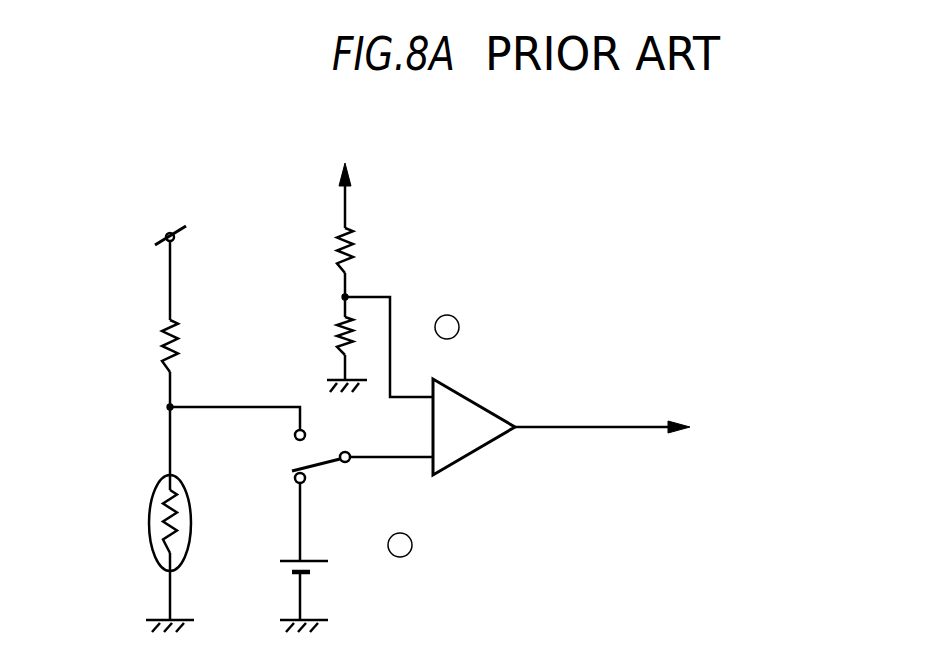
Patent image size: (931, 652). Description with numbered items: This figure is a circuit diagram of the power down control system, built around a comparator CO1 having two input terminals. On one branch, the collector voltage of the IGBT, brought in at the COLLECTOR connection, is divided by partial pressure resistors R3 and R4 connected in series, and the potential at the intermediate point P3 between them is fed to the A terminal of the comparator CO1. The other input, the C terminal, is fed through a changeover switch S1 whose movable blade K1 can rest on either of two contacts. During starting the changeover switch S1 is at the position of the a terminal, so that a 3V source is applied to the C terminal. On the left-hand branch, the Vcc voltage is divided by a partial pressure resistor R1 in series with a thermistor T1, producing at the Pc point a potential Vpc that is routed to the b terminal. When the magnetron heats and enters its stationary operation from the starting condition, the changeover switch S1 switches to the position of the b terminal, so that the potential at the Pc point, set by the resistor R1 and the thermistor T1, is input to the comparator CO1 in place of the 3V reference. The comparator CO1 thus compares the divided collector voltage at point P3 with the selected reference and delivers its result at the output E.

The Vcc voltage Vcc is at (175, 220).
The partial pressure resistor R1 is at (184, 346).
The Pc point Pc is at (156, 410).
The voltage Vpc line Vpc is at (235, 404).
The thermistor T1 is at (154, 523).
The collector terminal COLLECTOR is at (346, 182).
The partial pressure resistor R3 is at (329, 250).
The point P3 is at (331, 300).
The partial pressure resistor R4 is at (330, 336).
The A terminal A is at (406, 395).
The b terminal b is at (291, 435).
The a terminal a is at (287, 479).
The changeover switch S1 is at (354, 476).
The switch blade K1 is at (328, 457).
The C terminal C is at (405, 459).
The 3 V 3V is at (310, 551).
The comparator CO1 is at (479, 400).
The output E is at (602, 415).